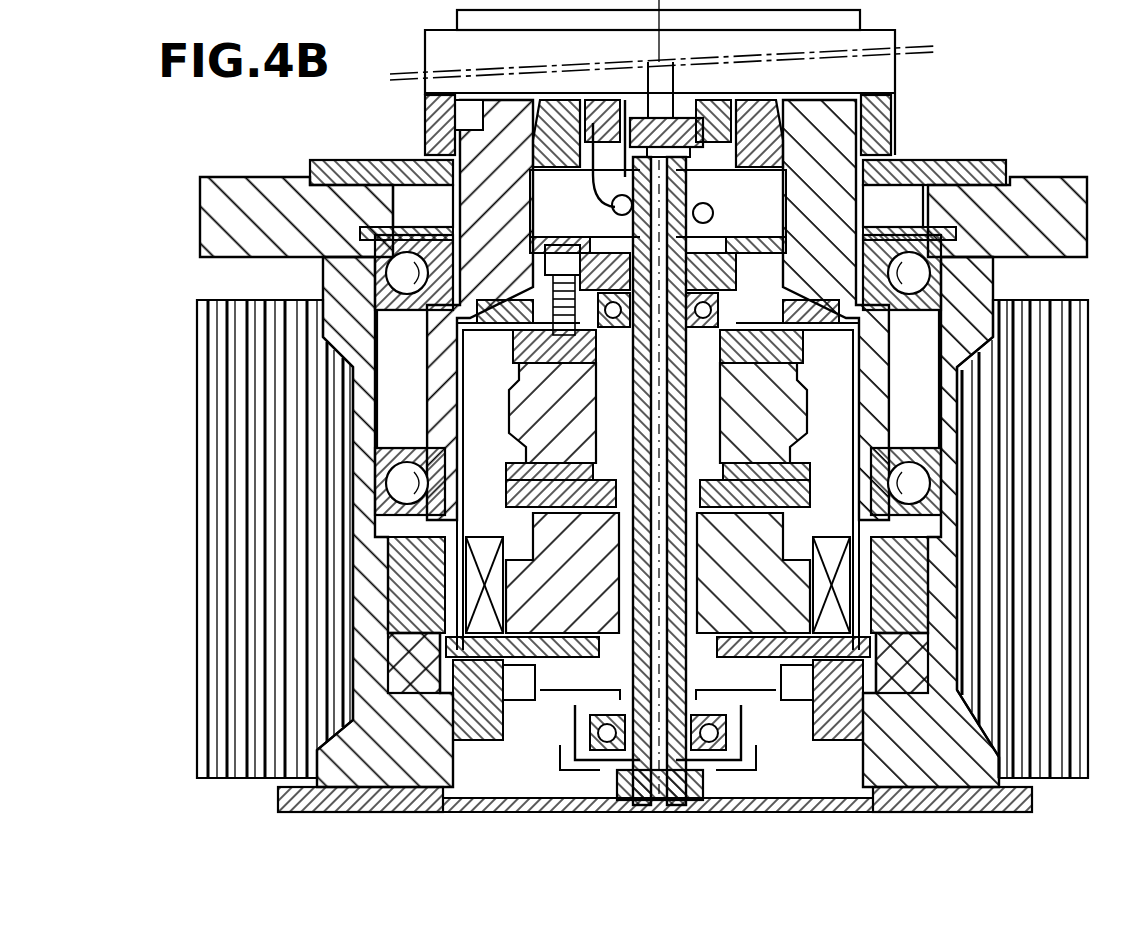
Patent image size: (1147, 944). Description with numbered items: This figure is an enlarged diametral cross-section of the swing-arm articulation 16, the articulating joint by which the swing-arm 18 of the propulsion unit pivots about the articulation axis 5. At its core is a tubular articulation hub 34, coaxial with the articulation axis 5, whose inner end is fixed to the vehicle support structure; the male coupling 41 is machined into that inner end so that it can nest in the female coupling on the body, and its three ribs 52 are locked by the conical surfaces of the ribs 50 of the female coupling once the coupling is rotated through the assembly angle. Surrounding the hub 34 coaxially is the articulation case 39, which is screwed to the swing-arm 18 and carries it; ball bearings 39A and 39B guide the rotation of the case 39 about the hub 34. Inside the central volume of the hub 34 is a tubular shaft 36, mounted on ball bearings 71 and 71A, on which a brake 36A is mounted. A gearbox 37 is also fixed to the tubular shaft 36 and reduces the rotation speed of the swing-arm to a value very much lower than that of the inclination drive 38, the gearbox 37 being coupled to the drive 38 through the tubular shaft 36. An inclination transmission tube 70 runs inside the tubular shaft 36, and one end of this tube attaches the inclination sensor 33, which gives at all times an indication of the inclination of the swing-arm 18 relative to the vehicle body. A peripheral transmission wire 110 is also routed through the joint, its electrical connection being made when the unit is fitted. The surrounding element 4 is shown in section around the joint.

The stator core 4 is at (225, 465).
The articulation axis 5 is at (660, 42).
The swing-arm articulation 16 is at (968, 140).
The swing-arm 18 is at (262, 213).
The inclination sensor 33 is at (680, 106).
The articulation hub 34 is at (495, 212).
The tubular shaft 36 is at (725, 422).
The brake 36A is at (555, 415).
The gearbox 37 is at (550, 570).
The inclination drive 38 is at (808, 745).
The articulation case 39 is at (355, 385).
The ball bearing 39A is at (370, 497).
The ball bearing 39B is at (395, 270).
The male coupling 41 is at (508, 130).
The ribs of the female coupling 50 is at (428, 125).
The ribs of the male coupling 52 is at (483, 117).
The inclination transmission tube 70 is at (665, 800).
The ball bearing 71 is at (597, 748).
The ball bearing 71A is at (712, 295).
The wire 110 is at (605, 200).